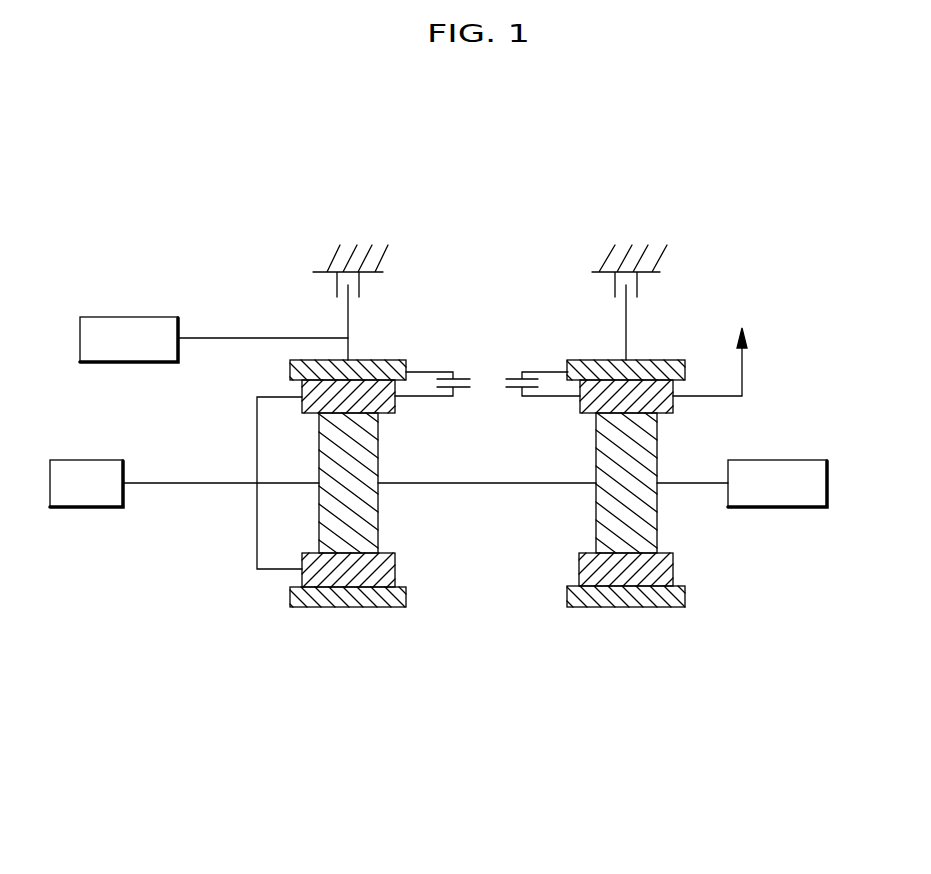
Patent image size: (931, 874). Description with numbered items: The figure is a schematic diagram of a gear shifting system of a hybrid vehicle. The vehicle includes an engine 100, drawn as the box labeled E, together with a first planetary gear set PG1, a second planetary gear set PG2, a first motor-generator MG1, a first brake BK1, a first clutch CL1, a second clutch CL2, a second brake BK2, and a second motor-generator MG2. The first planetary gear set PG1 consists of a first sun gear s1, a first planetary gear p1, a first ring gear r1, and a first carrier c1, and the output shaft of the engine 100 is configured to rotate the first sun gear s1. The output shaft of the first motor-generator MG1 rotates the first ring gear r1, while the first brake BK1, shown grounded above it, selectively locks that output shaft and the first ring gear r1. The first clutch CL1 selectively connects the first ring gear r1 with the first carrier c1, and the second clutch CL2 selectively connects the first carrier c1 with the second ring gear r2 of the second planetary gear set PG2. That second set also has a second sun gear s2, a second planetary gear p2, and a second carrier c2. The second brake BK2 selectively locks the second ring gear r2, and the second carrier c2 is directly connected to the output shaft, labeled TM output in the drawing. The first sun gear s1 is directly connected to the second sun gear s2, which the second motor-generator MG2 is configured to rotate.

The engine 100 is at (323, 516).
The engine E is at (323, 483).
The first motor-generator MG1 is at (214, 339).
The second motor-generator MG2 is at (742, 483).
The first brake BK1 is at (326, 268).
The second brake BK2 is at (601, 269).
The first clutch CL1 is at (437, 367).
The second clutch CL2 is at (543, 367).
The first planetary gear set PG1 is at (458, 506).
The second planetary gear set PG2 is at (630, 517).
The first ring gear r1 is at (375, 360).
The first planetary gear p1 is at (395, 407).
The first sun gear s1 is at (378, 508).
The second ring gear r2 is at (603, 359).
The second planetary gear p2 is at (580, 407).
The second sun gear s2 is at (657, 508).
The first carrier c1 is at (272, 397).
The second carrier c2 is at (706, 398).
The transmission output TM is at (744, 302).